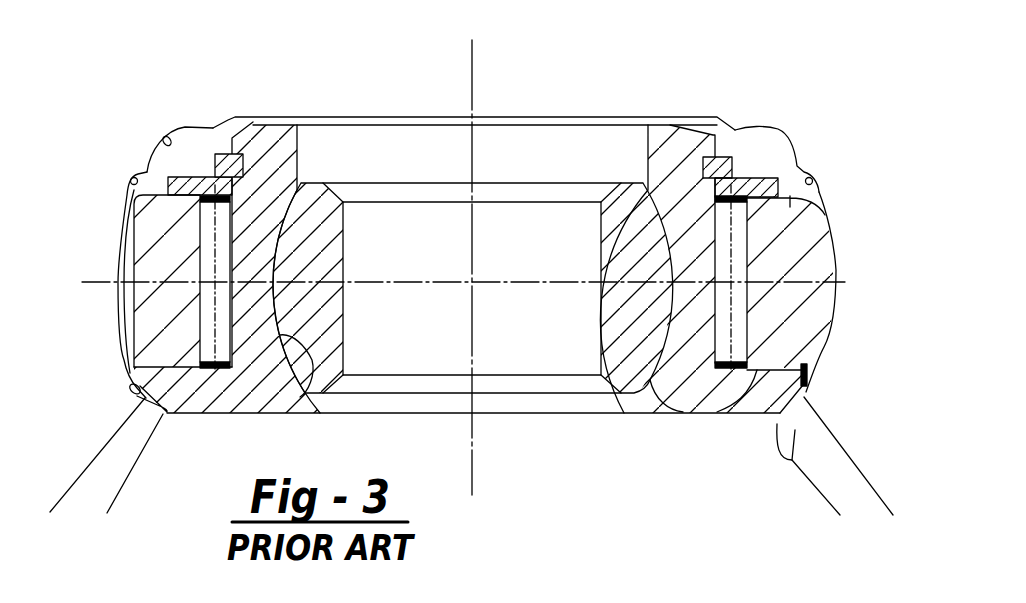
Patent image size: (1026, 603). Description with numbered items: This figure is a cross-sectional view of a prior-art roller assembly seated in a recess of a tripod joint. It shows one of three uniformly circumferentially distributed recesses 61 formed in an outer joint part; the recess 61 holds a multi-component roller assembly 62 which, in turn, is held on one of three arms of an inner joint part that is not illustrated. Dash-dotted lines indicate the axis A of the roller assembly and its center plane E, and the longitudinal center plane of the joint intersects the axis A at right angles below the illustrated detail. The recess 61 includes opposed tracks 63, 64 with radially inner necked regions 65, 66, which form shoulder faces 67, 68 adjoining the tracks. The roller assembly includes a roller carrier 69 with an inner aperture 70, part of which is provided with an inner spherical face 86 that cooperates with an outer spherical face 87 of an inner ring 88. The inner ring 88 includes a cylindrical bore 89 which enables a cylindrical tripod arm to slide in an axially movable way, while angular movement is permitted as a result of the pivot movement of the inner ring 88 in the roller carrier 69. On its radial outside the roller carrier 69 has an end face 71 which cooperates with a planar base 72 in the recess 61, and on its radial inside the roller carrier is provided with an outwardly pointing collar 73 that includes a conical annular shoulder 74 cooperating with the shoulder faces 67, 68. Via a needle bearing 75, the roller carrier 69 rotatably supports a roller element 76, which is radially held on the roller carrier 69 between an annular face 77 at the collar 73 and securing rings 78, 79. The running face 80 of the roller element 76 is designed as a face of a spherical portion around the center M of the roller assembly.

The recess 61 is at (168, 138).
The roller assembly 62 is at (340, 153).
The track 63 is at (130, 176).
The track 64 is at (813, 181).
The necked region 65 is at (145, 422).
The necked region 66 is at (792, 460).
The shoulder face 67 is at (155, 420).
The shoulder face 68 is at (779, 418).
The roller carrier 69 is at (274, 147).
The inner aperture 70 is at (302, 158).
The end face 71 is at (275, 116).
The planar base 72 is at (342, 130).
The collar 73 is at (221, 414).
The conical annular shoulder 74 is at (183, 414).
The needle bearing 75 is at (720, 220).
The roller element 76 is at (790, 196).
The annular face 77 is at (711, 413).
The securing ring 78 is at (716, 130).
The securing ring 79 is at (738, 176).
The running face 80 is at (836, 246).
The inner spherical face 86 is at (301, 398).
The outer spherical face 87 is at (276, 330).
The inner ring 88 is at (614, 378).
The cylindrical bore 89 is at (600, 325).
The axis A is at (474, 98).
The center plane E is at (101, 281).
The center M is at (471, 282).